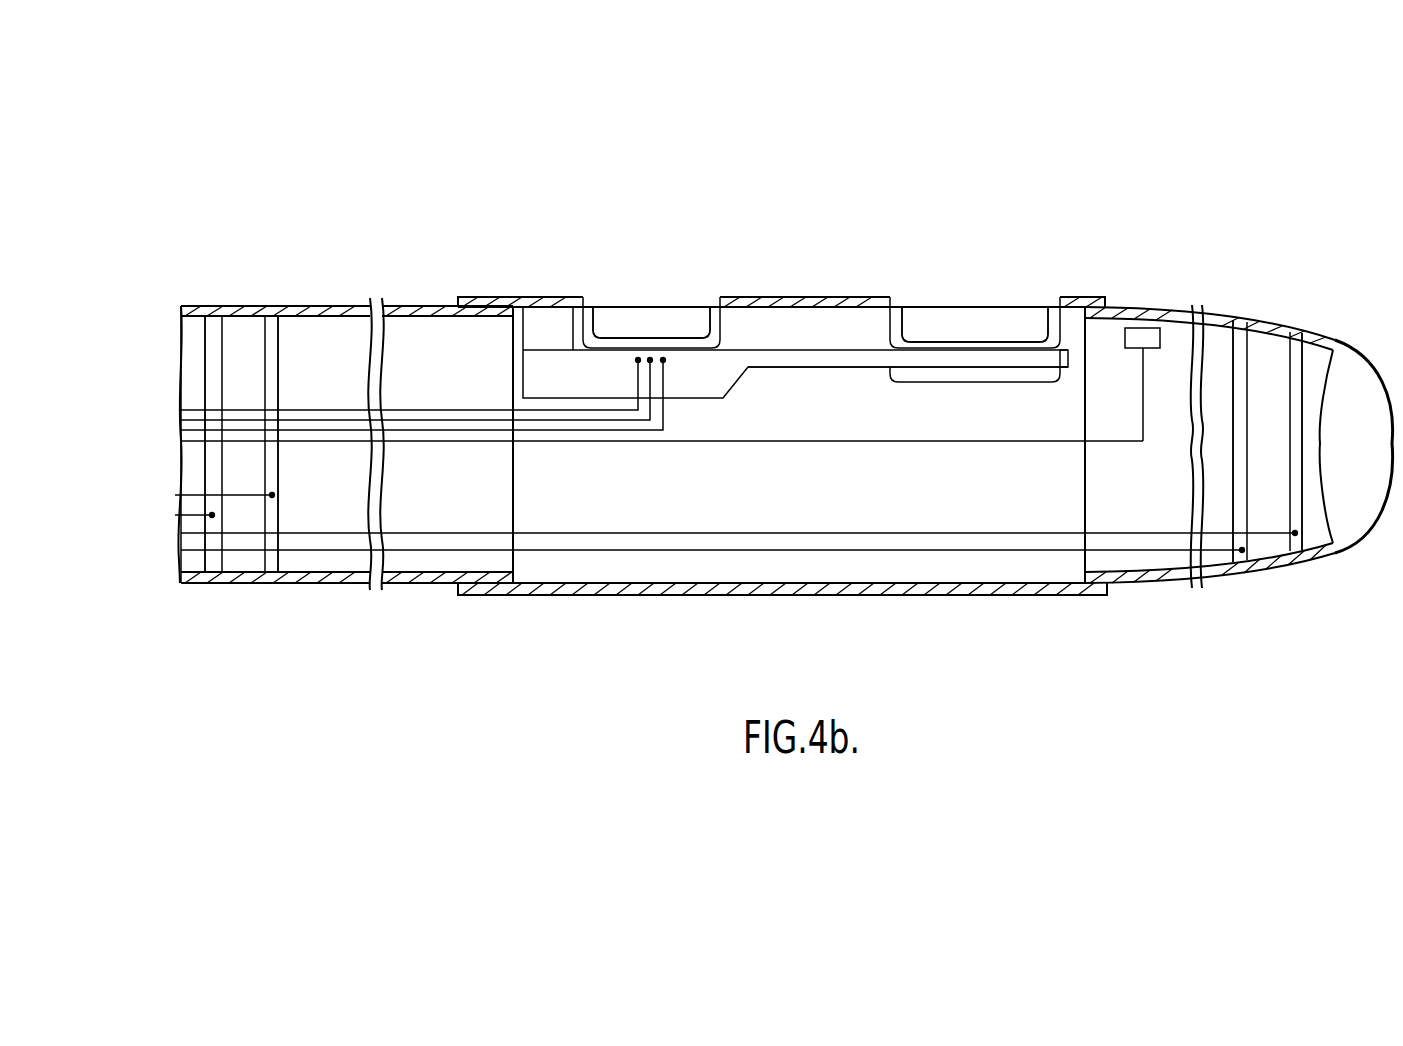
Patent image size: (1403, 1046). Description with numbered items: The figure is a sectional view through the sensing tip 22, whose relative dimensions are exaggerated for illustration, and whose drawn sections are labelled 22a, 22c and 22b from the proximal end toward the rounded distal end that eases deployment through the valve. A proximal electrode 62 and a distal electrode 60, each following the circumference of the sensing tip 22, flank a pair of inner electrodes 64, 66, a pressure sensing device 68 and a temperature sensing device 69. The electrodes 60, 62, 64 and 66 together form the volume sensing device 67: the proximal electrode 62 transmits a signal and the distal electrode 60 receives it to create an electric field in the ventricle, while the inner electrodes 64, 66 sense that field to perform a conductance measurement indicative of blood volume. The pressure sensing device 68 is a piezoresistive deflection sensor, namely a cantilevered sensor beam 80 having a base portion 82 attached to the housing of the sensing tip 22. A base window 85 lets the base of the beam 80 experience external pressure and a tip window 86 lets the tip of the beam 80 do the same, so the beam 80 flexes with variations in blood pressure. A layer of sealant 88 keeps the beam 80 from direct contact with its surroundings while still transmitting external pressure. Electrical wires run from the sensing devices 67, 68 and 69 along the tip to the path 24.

The sensing tip 22 is at (438, 596).
The proximal shaft section 22a is at (345, 650).
The distal tip section 22b is at (1305, 640).
The sensor housing section 22c is at (795, 650).
The path 24 is at (163, 442).
The distal electrode 60 is at (1296, 345).
The proximal electrode 62 is at (212, 330).
The inner electrode 64 is at (1240, 335).
The inner electrode 66 is at (272, 330).
The volume sensing device 67 is at (298, 266).
The pressure sensing device 68 is at (518, 266).
The temperature sensing device 69 is at (1150, 333).
The cantilevered sensor beam 80 is at (803, 360).
The base portion 82 is at (565, 393).
The base window 85 is at (667, 324).
The tip window 86 is at (1000, 334).
The layer of sealant 88 is at (618, 337).